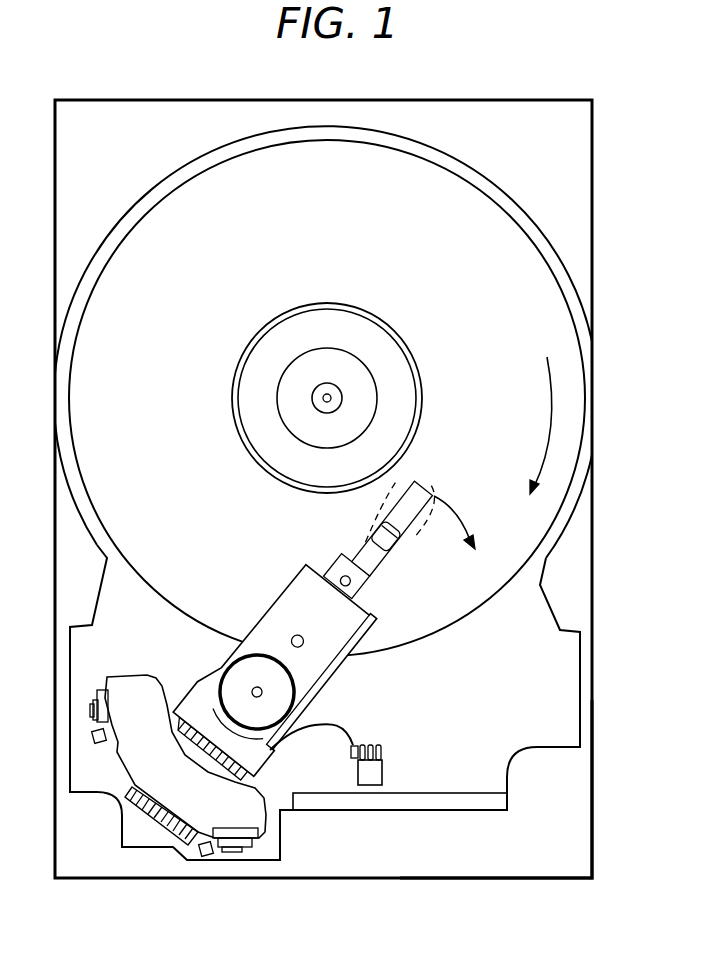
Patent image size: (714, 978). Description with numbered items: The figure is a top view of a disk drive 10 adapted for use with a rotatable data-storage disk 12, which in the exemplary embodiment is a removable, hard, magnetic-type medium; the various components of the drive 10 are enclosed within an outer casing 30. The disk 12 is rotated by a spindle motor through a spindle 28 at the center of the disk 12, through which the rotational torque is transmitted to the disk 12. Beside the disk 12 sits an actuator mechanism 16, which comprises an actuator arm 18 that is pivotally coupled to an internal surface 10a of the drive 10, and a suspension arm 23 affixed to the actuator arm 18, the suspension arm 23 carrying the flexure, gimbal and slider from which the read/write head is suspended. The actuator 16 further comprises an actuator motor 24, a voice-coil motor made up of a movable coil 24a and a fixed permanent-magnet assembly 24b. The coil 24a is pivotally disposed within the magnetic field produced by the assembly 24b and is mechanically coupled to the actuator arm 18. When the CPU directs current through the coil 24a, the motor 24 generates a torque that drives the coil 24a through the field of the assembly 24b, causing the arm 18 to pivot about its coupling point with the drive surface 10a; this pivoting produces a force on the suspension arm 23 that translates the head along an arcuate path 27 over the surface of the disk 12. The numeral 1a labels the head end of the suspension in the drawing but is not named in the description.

The disk drive 10 is at (480, 80).
The internal surface 10a is at (161, 637).
The data-storage disk 12 is at (528, 318).
The actuator mechanism 16 is at (232, 606).
The actuator arm 18 is at (306, 690).
The head slider 1a is at (418, 474).
The suspension arm 23 is at (365, 550).
The actuator motor 24 is at (92, 757).
The movable coil 24a is at (168, 846).
The fixed permanent-magnet assembly 24b is at (164, 800).
The arcuate path 27 is at (447, 512).
The spindle 28 is at (331, 400).
The outer casing 30 is at (597, 866).